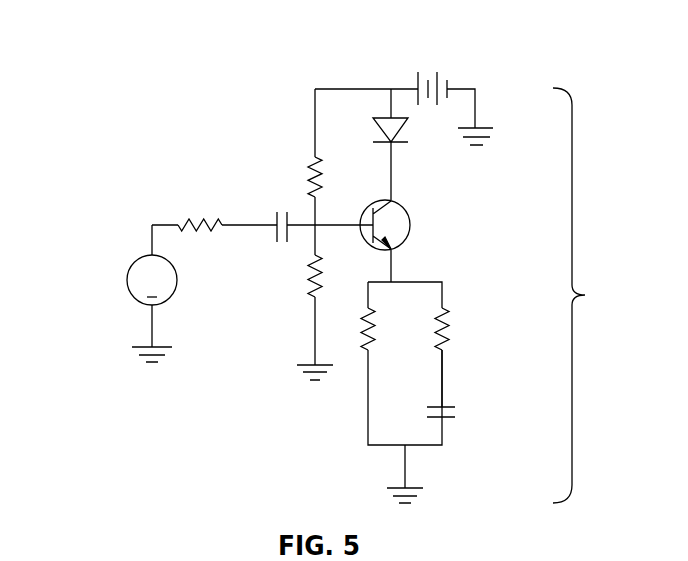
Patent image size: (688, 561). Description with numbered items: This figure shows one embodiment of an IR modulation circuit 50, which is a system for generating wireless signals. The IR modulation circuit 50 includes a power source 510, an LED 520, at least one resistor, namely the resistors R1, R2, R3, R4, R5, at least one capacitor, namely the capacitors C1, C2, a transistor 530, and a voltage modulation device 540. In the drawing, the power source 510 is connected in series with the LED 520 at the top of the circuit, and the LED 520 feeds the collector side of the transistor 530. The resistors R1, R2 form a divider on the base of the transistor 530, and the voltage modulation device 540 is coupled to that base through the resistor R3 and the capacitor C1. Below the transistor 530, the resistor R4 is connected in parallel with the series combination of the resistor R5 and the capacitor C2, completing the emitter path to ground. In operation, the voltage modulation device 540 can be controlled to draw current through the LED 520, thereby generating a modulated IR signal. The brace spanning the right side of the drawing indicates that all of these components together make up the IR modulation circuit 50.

The IR modulation circuit 50 is at (589, 295).
The power source 510 is at (452, 63).
The LED 520 is at (360, 116).
The transistor 530 is at (417, 198).
The voltage modulation device 540 is at (126, 281).
The resistor R1 is at (304, 159).
The resistor R2 is at (301, 281).
The resistor R3 is at (195, 209).
The resistor R4 is at (354, 356).
The resistor R5 is at (457, 329).
The capacitor C1 is at (269, 246).
The capacitor C2 is at (463, 421).